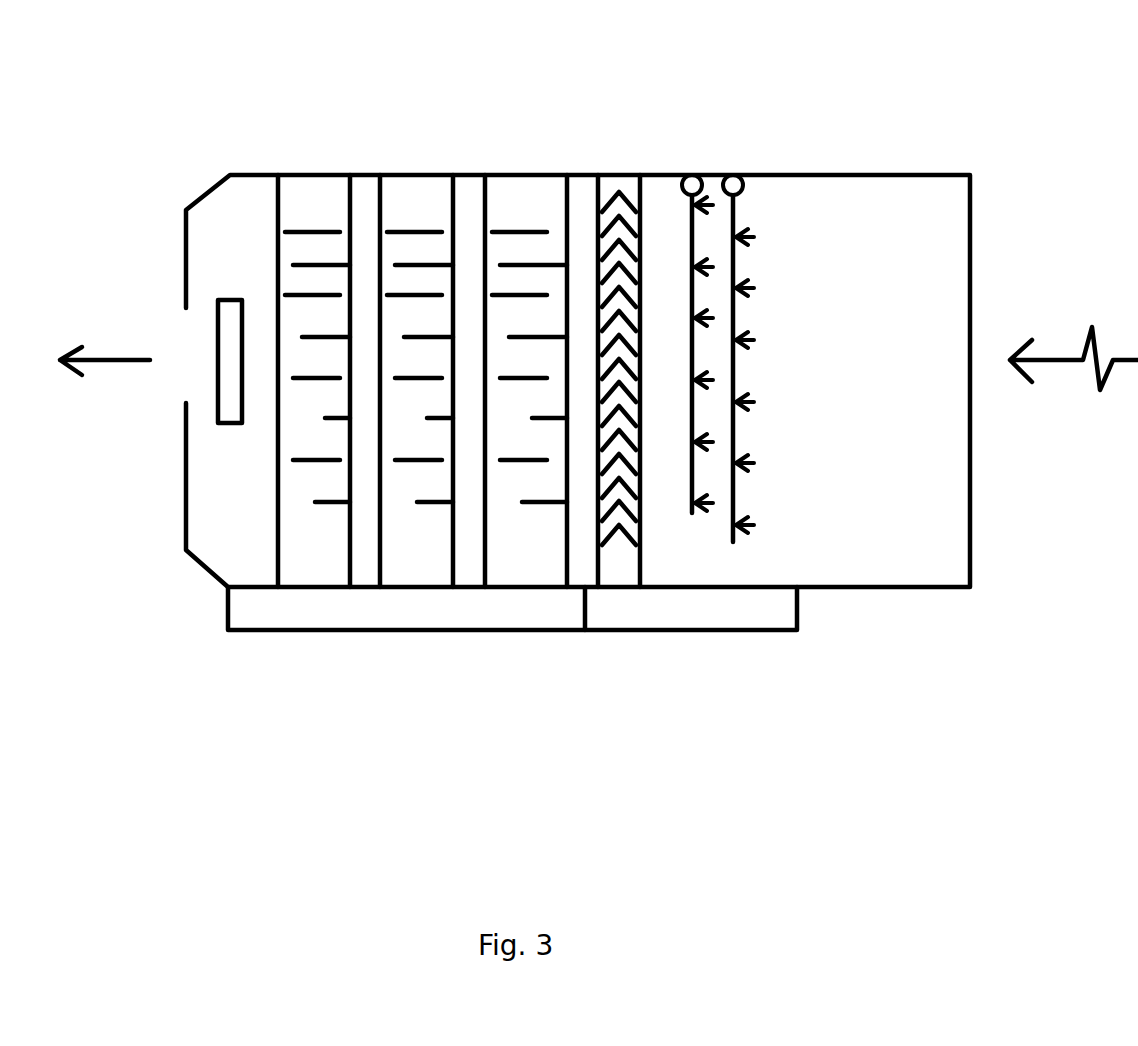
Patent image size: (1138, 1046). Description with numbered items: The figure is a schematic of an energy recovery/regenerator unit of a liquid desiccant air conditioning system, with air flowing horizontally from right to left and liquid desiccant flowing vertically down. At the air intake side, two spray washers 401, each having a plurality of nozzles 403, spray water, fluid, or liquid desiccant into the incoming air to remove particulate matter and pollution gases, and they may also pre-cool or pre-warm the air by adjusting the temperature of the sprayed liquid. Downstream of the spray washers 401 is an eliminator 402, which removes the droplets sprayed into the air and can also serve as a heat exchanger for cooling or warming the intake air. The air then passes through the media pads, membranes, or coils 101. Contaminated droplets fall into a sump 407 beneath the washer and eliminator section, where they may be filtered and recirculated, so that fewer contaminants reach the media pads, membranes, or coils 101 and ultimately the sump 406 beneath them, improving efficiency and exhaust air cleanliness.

The first media pad, membrane, or coil 101 is at (522, 175).
The spray washer 401 is at (730, 175).
The eliminator 402 is at (615, 175).
The nozzles 403 is at (750, 337).
The sump 406 is at (347, 628).
The sump 407 is at (737, 632).